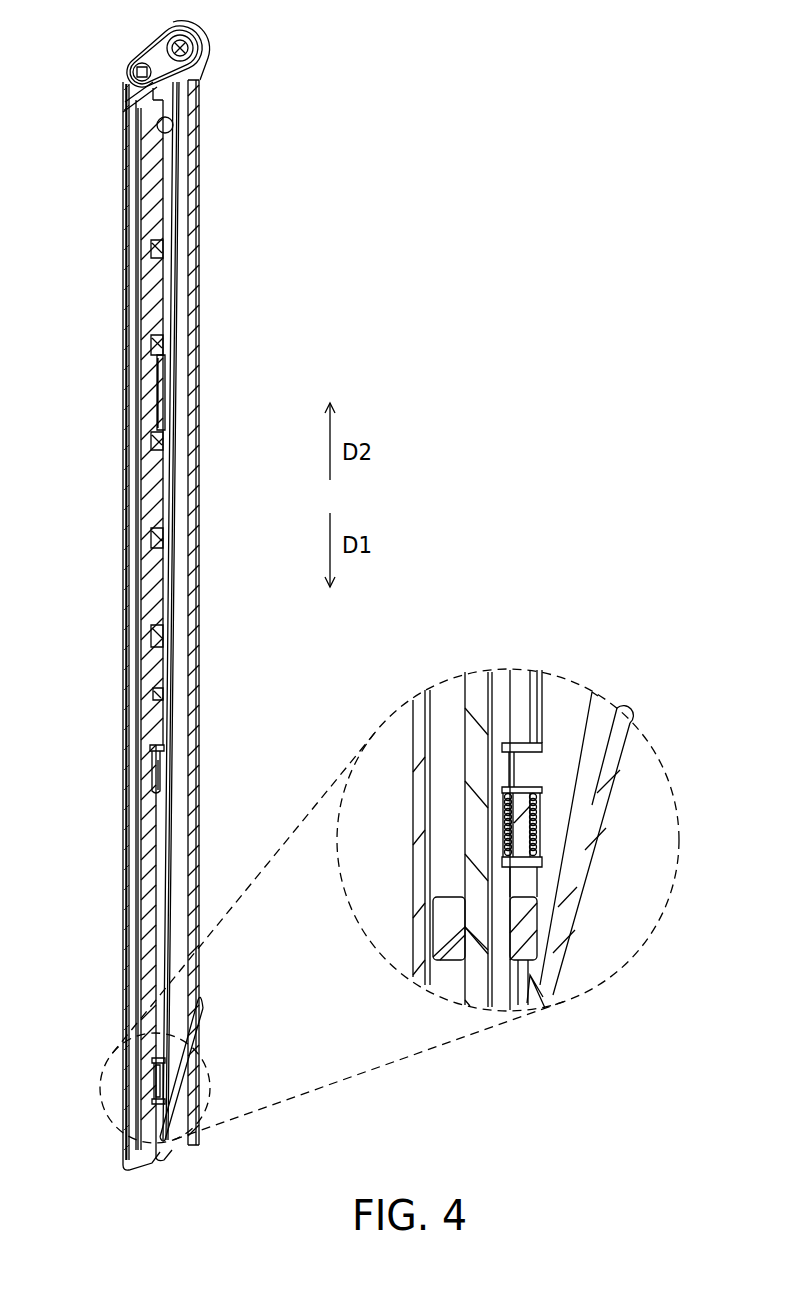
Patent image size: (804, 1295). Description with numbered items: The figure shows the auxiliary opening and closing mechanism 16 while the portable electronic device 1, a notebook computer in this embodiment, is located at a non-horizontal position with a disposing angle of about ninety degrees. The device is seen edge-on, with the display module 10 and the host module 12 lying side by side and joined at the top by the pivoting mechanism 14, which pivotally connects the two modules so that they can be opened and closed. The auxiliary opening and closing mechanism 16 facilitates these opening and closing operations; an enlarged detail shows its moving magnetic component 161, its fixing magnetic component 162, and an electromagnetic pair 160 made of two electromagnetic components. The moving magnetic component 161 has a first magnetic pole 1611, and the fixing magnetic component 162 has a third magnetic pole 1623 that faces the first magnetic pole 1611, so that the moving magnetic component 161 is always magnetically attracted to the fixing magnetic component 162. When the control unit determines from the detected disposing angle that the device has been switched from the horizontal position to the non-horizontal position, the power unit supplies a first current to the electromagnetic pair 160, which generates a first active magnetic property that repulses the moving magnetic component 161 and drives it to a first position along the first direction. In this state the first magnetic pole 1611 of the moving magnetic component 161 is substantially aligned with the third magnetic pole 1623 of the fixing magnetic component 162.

The portable electronic device 1 is at (518, 187).
The display module 10 is at (122, 201).
The host module 12 is at (200, 226).
The pivoting mechanism 14 is at (200, 50).
The auxiliary opening and closing mechanism 16 is at (605, 891).
The electromagnetic pair 160 is at (540, 823).
The moving magnetic component 161 is at (560, 970).
The first magnetic pole 1611 is at (527, 918).
The fixing magnetic component 162 is at (387, 888).
The third magnetic pole 1623 is at (445, 925).